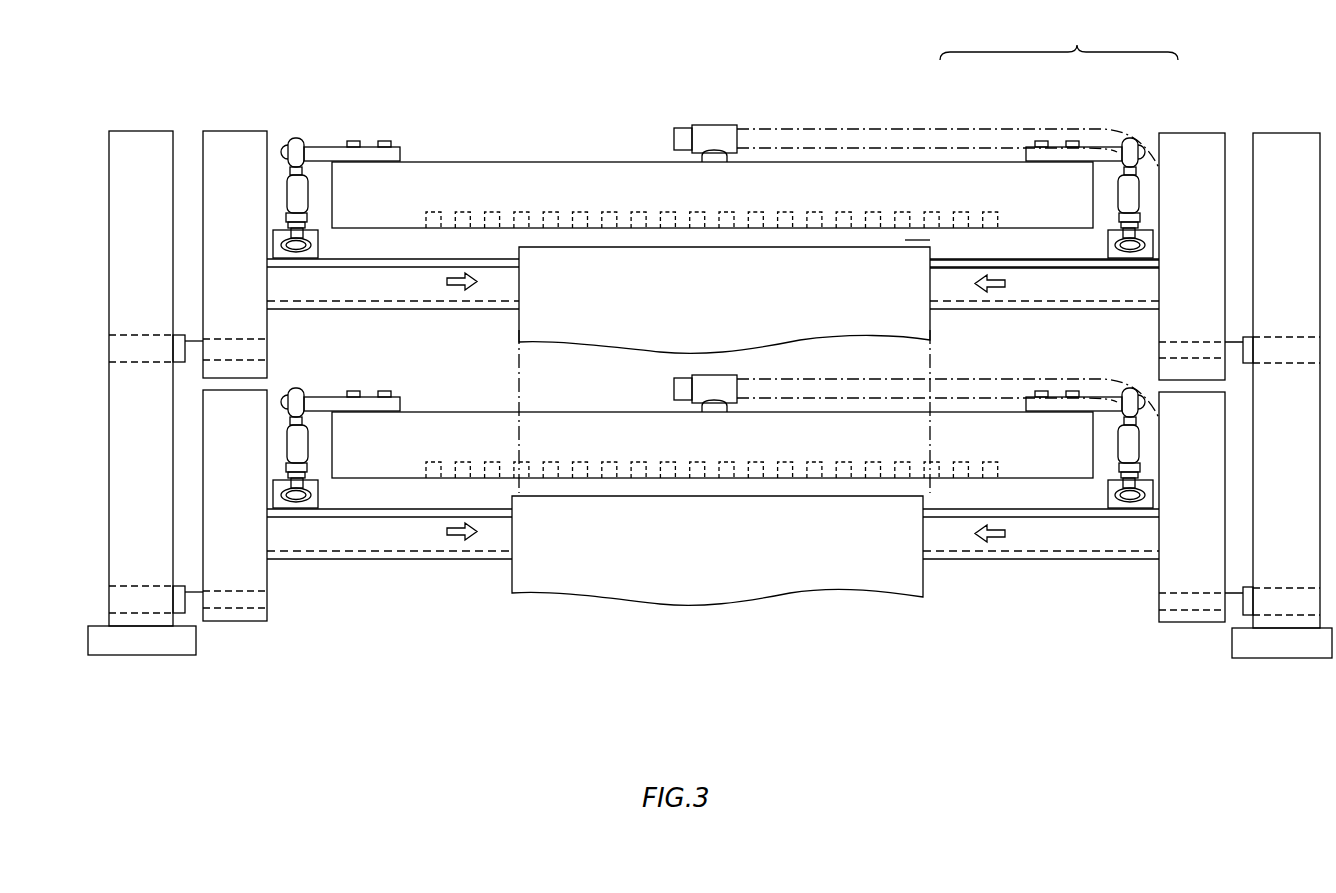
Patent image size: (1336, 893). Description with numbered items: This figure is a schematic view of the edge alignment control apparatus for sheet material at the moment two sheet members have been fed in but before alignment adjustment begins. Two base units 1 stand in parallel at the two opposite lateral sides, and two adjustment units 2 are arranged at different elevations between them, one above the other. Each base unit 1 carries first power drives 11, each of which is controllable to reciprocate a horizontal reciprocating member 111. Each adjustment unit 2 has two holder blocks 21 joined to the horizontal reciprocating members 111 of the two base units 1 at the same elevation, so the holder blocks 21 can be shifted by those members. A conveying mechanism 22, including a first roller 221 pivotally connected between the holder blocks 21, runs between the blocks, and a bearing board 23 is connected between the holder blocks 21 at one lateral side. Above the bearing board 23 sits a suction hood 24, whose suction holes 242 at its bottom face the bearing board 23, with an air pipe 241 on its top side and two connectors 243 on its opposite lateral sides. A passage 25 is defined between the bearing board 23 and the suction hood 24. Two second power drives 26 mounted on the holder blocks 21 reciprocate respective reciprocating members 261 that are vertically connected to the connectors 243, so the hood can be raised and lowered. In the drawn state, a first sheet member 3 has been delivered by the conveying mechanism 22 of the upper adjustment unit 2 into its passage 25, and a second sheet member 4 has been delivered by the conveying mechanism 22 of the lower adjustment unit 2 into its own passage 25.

The base unit 1 is at (141, 143).
The first power drive 11 is at (138, 343).
The horizontal reciprocating member 111 is at (193, 353).
The adjustment unit 2 is at (1059, 38).
The holder block 21 is at (1187, 142).
The conveying mechanism 22 is at (1067, 333).
The first roller 221 is at (1092, 290).
The bearing board 23 is at (1022, 260).
The suction hood 24 is at (613, 173).
The air pipe 241 is at (712, 137).
The suction holes 242 is at (515, 210).
The connector 243 is at (327, 152).
The passage 25 is at (905, 240).
The second power drive 26 is at (275, 232).
The reciprocating member 261 is at (292, 188).
The first sheet member 3 is at (613, 335).
The second sheet member 4 is at (605, 585).